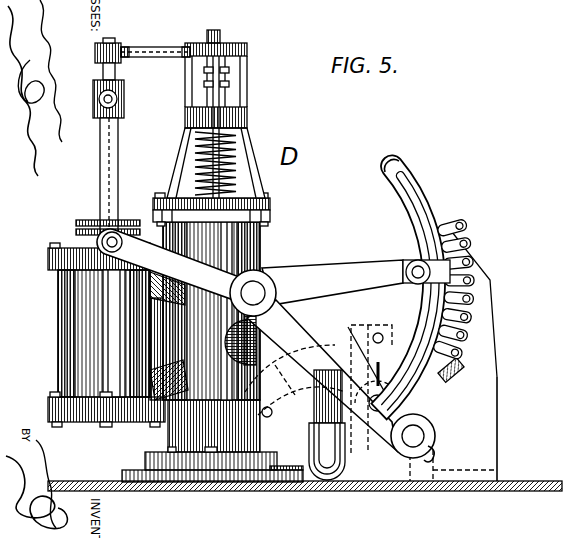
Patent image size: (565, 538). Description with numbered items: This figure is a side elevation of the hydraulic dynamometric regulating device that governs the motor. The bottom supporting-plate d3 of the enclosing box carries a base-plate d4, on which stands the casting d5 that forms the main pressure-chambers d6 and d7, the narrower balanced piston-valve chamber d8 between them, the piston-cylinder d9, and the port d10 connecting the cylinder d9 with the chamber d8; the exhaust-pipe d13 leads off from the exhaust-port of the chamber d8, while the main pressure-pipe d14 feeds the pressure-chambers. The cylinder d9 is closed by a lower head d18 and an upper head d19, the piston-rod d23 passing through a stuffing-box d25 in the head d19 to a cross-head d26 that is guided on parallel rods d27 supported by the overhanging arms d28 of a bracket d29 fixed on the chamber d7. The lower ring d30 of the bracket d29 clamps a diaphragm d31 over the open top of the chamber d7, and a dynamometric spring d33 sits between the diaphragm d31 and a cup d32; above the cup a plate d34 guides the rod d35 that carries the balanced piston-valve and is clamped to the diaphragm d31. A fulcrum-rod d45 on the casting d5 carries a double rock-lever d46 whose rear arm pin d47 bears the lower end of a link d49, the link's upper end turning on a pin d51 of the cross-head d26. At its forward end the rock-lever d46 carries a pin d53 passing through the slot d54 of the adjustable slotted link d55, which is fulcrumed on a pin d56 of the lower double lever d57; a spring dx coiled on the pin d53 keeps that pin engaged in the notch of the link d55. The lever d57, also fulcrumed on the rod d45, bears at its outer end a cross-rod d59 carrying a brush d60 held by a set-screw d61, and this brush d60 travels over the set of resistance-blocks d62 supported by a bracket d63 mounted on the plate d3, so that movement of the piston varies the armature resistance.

The bottom supporting-plate d3 is at (290, 489).
The base-plate d4 is at (127, 480).
The casting d5 is at (100, 333).
The main pressure-chamber d6 is at (313, 405).
The main pressure-chamber d7 is at (260, 248).
The balanced piston-valve chamber d8 is at (262, 390).
The piston-cylinder d9 is at (130, 330).
The port d10 is at (160, 303).
The exhaust-pipe d13 is at (340, 435).
The main pressure-pipe d14 is at (168, 366).
The head d18 is at (78, 421).
The head d19 is at (52, 255).
The piston-rod d23 is at (102, 200).
The stuffing-box d25 is at (92, 227).
The cross-head d26 is at (97, 99).
The parallel rods d27 is at (110, 42).
The overhanging arms d28 is at (150, 47).
The bracket d29 is at (247, 130).
The lower ring d30 is at (270, 203).
The diaphragm d31 is at (270, 214).
The cup d32 is at (243, 110).
The dynamometric spring d33 is at (195, 152).
The plate d34 is at (247, 50).
The rod d35 is at (213, 30).
The fulcrum-rod d45 is at (255, 291).
The double rock-lever d46 is at (250, 267).
The pin d47 is at (123, 246).
The link d49 is at (118, 205).
The pin d51 is at (101, 110).
The pin d53 is at (410, 262).
The slot d54 is at (408, 196).
The adjustable slotted link d55 is at (391, 165).
The pin d56 is at (373, 389).
The double lever d57 is at (288, 360).
The cross-rod d59 is at (436, 434).
The brush d60 is at (440, 368).
The set-screw d61 is at (434, 452).
The resistance-blocks d62 is at (466, 236).
The bracket d63 is at (498, 410).
The spring dx is at (418, 305).